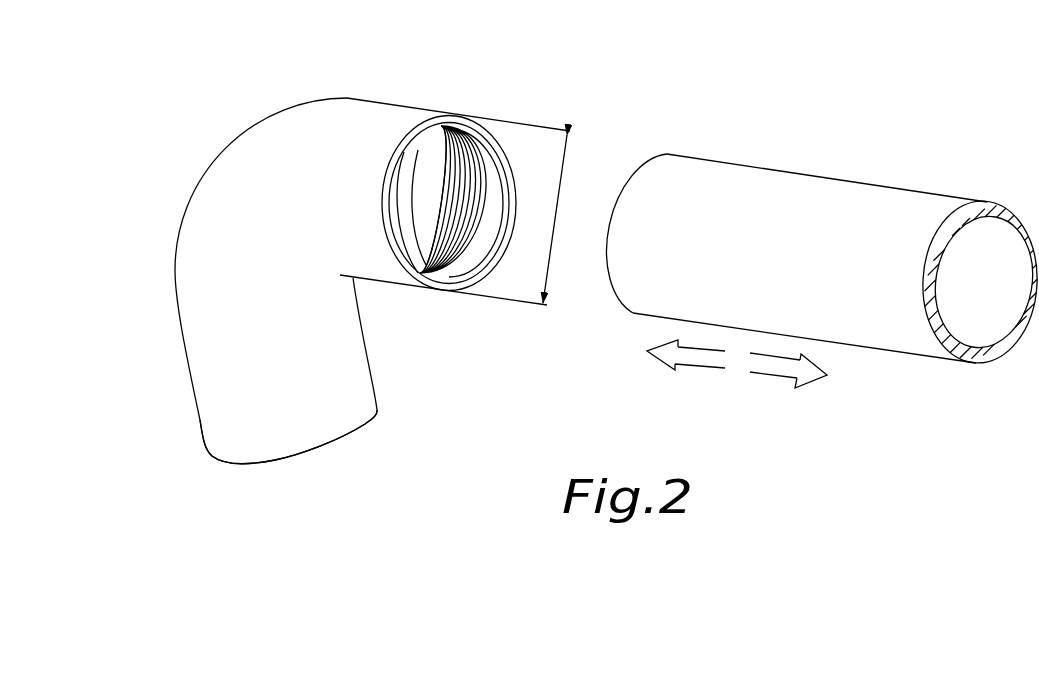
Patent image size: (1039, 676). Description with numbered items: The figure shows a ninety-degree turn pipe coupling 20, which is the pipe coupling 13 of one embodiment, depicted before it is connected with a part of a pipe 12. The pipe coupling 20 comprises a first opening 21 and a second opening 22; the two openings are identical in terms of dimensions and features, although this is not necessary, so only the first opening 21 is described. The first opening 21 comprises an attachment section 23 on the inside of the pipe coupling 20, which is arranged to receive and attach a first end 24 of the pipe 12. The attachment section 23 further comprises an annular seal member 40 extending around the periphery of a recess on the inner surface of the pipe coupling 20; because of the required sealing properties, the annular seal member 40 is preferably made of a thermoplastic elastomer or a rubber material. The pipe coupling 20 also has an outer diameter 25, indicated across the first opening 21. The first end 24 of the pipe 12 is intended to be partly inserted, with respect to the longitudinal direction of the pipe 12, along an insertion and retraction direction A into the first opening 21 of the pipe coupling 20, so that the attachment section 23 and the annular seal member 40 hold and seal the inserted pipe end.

The pipe coupling 20 is at (372, 250).
The pipe coupling 13 is at (460, 85).
The first opening 21 is at (402, 262).
The second opening 22 is at (310, 452).
The attachment section 23 is at (498, 207).
The annular seal member 40 is at (460, 237).
The outer diameter 25 is at (556, 207).
The pipe 12 is at (823, 201).
The first end 24 is at (715, 185).
The insertion and retraction direction A is at (737, 364).